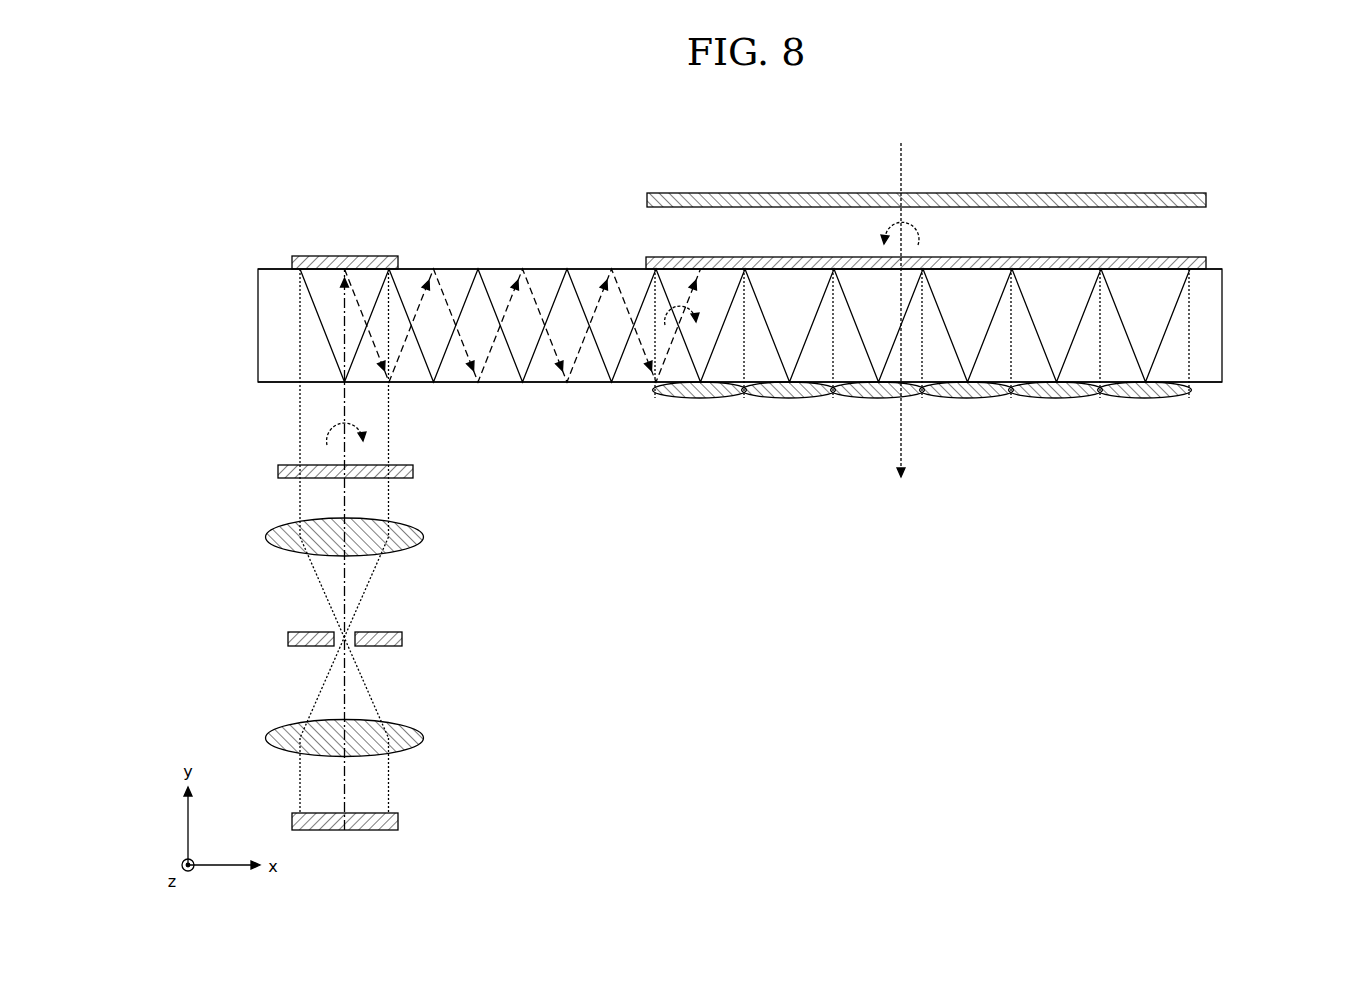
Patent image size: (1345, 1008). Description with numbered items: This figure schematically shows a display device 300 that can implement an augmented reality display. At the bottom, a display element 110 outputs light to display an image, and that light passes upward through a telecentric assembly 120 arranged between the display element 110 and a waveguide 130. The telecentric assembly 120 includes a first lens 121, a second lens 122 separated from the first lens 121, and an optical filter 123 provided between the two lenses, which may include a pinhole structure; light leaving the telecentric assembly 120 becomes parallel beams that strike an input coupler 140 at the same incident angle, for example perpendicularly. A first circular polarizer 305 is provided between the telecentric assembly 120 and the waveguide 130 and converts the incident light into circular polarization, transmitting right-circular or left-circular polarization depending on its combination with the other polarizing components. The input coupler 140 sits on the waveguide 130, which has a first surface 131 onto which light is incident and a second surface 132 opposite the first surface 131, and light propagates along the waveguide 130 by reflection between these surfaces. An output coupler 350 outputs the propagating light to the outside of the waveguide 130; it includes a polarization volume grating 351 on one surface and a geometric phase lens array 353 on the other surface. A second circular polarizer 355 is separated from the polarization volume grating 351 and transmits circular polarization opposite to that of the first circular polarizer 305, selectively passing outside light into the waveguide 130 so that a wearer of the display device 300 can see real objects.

The display device 300 is at (1250, 167).
The display element 110 is at (398, 822).
The telecentric assembly 120 is at (418, 637).
The first lens 121 is at (423, 735).
The second lens 122 is at (392, 558).
The optical filter 123 is at (404, 639).
The first circular polarizer 305 is at (278, 471).
The input coupler 140 is at (292, 263).
The waveguide 130 is at (258, 303).
The first surface 131 is at (540, 268).
The second surface 132 is at (540, 382).
The output coupler 350 is at (976, 428).
The polarization volume grating 351 is at (1207, 263).
The geometric phase lens array 353 is at (1190, 392).
The second circular polarizer 355 is at (1210, 204).